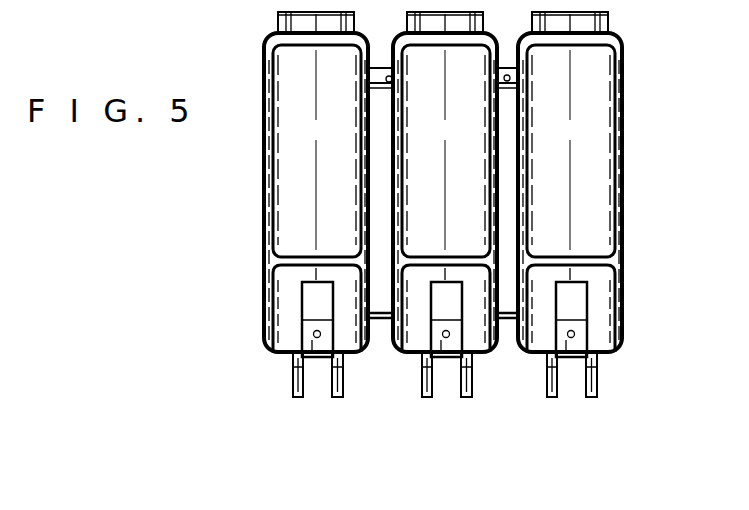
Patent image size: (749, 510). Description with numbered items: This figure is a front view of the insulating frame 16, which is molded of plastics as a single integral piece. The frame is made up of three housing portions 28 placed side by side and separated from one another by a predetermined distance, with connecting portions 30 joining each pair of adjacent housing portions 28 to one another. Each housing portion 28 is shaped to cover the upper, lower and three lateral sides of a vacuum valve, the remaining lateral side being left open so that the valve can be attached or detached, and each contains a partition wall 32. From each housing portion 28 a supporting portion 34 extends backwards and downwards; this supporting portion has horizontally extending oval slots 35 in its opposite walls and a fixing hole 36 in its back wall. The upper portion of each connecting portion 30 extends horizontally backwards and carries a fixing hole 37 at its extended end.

The insulating frame 16 is at (634, 127).
The housing portion 28 is at (289, 200).
The connecting portion 30 is at (385, 302).
The partition wall 32 is at (322, 256).
The supporting portion 34 is at (318, 378).
The oval slot 35 is at (296, 378).
The fixing hole 36 is at (313, 335).
The fixing hole 37 is at (389, 75).